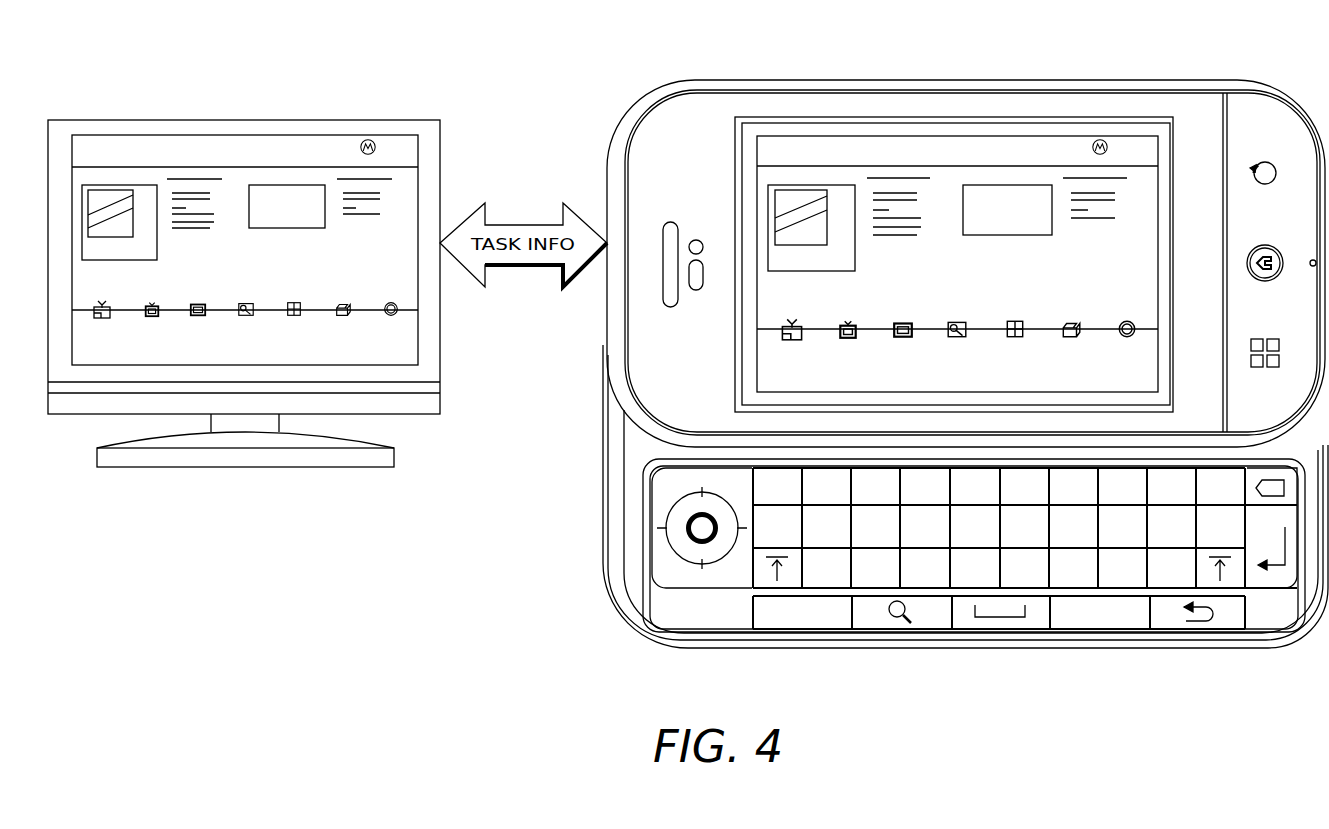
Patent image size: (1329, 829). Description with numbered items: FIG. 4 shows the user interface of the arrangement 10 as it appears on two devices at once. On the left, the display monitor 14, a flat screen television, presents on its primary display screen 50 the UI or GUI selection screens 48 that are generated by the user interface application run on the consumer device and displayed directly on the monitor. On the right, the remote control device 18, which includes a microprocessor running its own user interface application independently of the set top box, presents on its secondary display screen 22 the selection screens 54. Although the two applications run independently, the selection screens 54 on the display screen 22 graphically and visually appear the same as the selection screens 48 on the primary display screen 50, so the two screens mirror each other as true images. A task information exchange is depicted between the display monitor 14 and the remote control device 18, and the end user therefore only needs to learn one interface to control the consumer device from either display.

The arrangement 10 is at (356, 70).
The display monitor 14 is at (416, 404).
The UI or GUI selection screens 48 is at (128, 292).
The display screen 50 is at (240, 166).
The UI or GUI selection screens 54 is at (791, 138).
The display screen 22 is at (1115, 138).
The remote control device 18 is at (1263, 574).